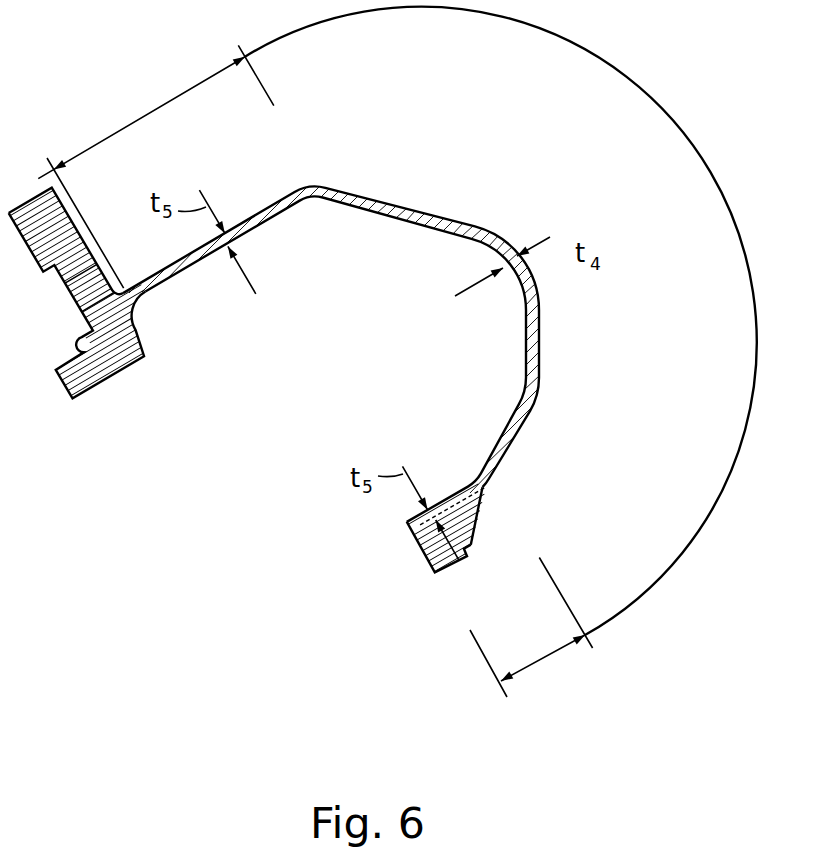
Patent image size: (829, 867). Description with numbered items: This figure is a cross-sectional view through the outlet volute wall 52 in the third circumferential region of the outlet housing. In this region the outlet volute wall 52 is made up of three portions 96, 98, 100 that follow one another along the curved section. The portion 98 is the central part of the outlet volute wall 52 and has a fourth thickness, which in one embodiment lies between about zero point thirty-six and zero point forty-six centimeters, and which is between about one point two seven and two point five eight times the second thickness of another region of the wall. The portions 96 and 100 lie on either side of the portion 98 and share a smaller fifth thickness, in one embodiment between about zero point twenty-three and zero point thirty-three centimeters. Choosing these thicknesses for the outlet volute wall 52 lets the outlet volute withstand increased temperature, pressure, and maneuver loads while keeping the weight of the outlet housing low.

The outlet volute wall 52 is at (413, 223).
The portion of outlet volute wall 98 is at (672, 116).
The portion of outlet volute wall 100 is at (130, 124).
The portion of outlet volute wall 96 is at (545, 657).